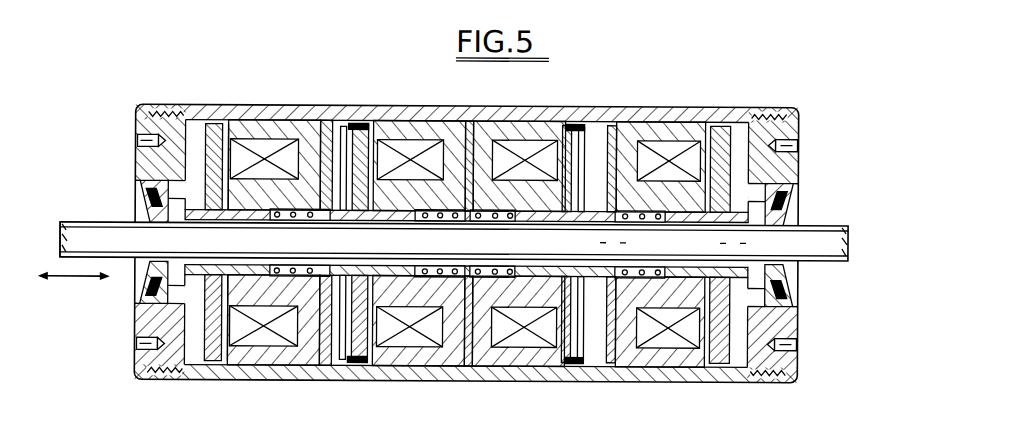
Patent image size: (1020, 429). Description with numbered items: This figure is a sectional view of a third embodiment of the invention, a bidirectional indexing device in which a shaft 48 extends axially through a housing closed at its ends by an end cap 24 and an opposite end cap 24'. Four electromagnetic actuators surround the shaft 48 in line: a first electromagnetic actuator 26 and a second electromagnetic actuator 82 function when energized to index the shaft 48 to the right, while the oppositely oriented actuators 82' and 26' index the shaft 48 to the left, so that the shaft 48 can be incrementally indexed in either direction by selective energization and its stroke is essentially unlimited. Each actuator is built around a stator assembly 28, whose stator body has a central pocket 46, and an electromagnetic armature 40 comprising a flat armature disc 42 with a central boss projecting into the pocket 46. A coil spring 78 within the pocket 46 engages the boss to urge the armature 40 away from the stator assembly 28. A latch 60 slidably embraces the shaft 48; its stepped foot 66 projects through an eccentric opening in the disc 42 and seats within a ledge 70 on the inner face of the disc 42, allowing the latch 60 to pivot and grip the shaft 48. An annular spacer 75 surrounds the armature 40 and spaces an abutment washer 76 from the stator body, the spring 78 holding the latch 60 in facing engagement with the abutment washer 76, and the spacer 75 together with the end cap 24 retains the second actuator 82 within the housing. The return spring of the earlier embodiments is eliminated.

The end cap 24 is at (133, 241).
The end cap 24' is at (800, 245).
The first electromagnetic actuator 26 is at (419, 133).
The electromagnetic actuator 26' is at (668, 141).
The stator assembly 28 is at (278, 373).
The electromagnetic armature 40 is at (203, 373).
The armature disc 42 is at (358, 124).
The central pocket 46 is at (498, 272).
The shaft 48 is at (101, 224).
The latch 60 is at (343, 180).
The stepped foot 66 is at (558, 346).
The ledge 70 is at (712, 332).
The annular spacer 75 is at (351, 373).
The abutment washer 76 is at (323, 373).
The coil spring 78 is at (440, 272).
The second electromagnetic actuator 82 is at (326, 91).
The electromagnetic actuator 82' is at (607, 100).